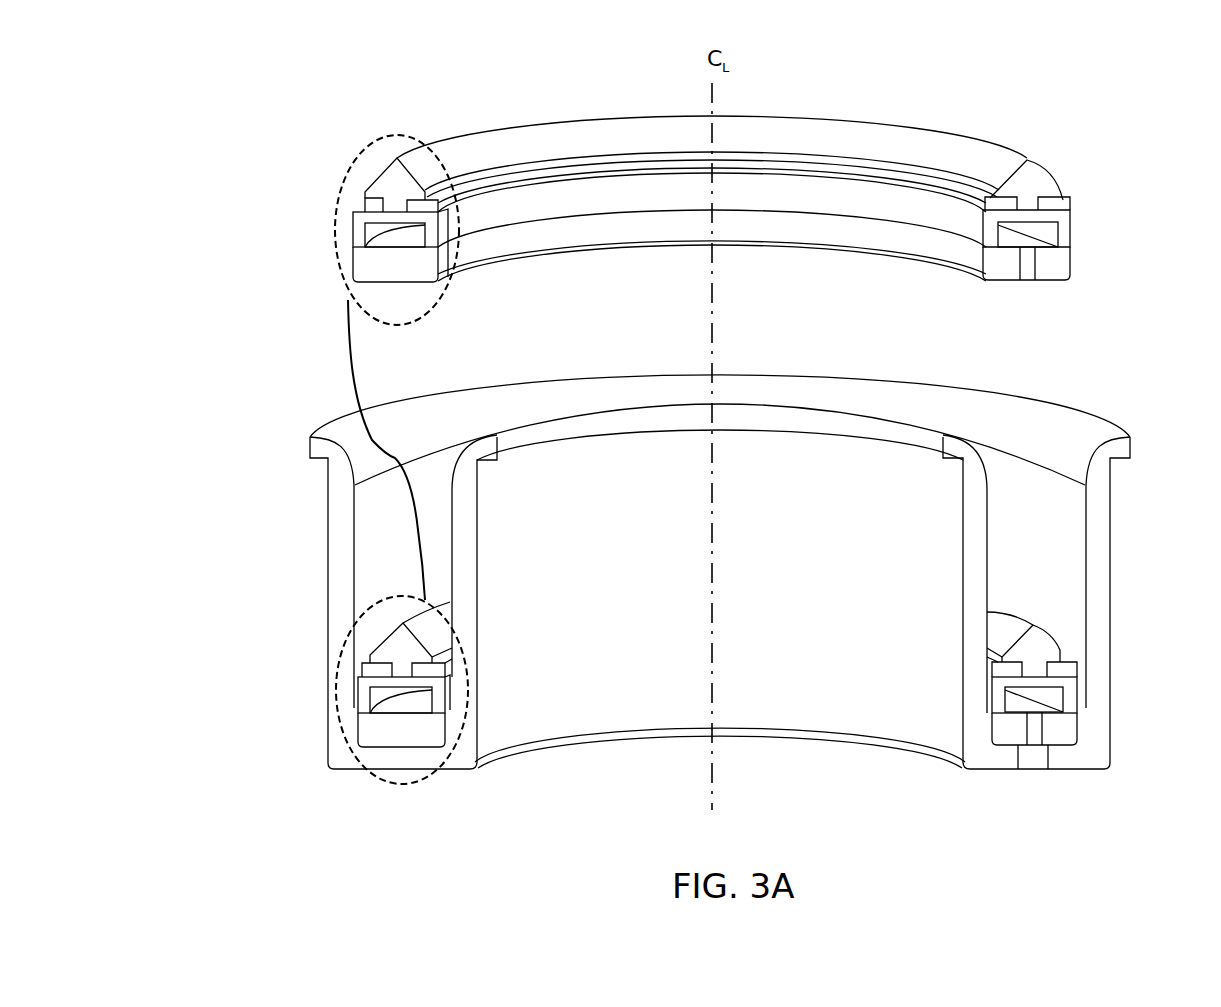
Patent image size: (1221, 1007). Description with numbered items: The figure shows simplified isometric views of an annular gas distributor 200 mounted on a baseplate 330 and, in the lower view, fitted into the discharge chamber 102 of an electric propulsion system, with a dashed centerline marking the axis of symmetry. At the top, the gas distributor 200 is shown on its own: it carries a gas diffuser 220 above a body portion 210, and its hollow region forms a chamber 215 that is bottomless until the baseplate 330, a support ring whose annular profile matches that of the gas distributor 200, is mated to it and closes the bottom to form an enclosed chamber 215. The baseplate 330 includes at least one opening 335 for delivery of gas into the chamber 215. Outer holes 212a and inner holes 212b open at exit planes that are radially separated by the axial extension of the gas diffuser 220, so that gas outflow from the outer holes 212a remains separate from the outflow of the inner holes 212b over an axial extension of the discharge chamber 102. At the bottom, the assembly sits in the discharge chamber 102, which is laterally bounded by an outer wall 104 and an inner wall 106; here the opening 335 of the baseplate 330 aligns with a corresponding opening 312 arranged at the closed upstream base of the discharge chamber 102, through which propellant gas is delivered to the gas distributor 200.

The gas distributor 200 is at (238, 163).
The gas diffuser 220 is at (371, 181).
The ring body portion 210 is at (349, 220).
The baseplate 330 is at (346, 265).
The outer holes 212a is at (1058, 197).
The inner holes 212b is at (992, 196).
The chamber 215 is at (1044, 233).
The opening 335 is at (1027, 281).
The discharge chamber 102 is at (1047, 553).
The outer wall 104 is at (1087, 584).
The inner wall 106 is at (982, 522).
The opening 312 is at (1033, 773).